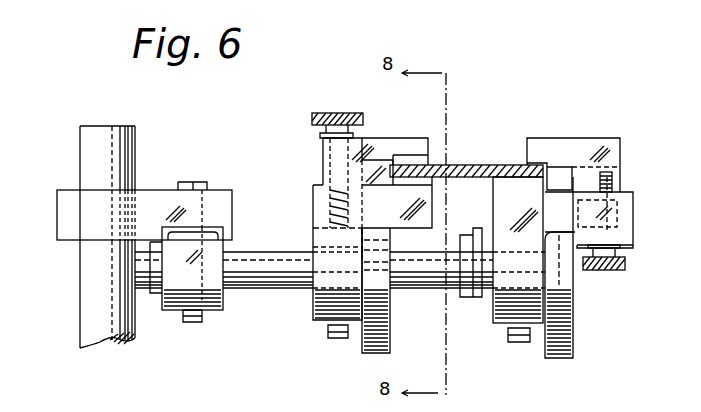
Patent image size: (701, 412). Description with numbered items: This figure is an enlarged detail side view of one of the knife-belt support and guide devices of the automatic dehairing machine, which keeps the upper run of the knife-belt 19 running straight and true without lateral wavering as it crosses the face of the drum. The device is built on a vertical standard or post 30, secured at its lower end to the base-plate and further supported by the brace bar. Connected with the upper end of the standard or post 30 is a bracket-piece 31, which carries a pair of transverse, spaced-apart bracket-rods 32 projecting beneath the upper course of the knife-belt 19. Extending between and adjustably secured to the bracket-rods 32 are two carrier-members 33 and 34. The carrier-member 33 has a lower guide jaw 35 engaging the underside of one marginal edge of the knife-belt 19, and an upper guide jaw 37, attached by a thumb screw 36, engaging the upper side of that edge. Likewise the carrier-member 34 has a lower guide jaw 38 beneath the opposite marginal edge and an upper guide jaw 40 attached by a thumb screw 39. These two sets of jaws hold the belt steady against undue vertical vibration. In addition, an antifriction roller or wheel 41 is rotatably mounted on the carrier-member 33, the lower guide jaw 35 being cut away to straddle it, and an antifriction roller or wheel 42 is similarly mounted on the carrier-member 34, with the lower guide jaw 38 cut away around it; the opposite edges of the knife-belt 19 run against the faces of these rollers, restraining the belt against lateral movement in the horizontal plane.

The knife-belt 19 is at (475, 165).
The standard or post 30 is at (80, 287).
The bracket-piece 31 is at (212, 272).
The bracket-rods 32 is at (270, 288).
The carrier-member 33 is at (313, 230).
The carrier-member 34 is at (625, 220).
The lower guide jaw 35 is at (430, 188).
The thumb screw 36 is at (336, 113).
The upper guide jaw 37 is at (428, 160).
The lower guide jaw 38 is at (495, 185).
The thumb screw 39 is at (625, 266).
The upper guide jaw 40 is at (535, 163).
The antifriction roller or wheel 41 is at (390, 337).
The antifriction roller or wheel 42 is at (556, 358).